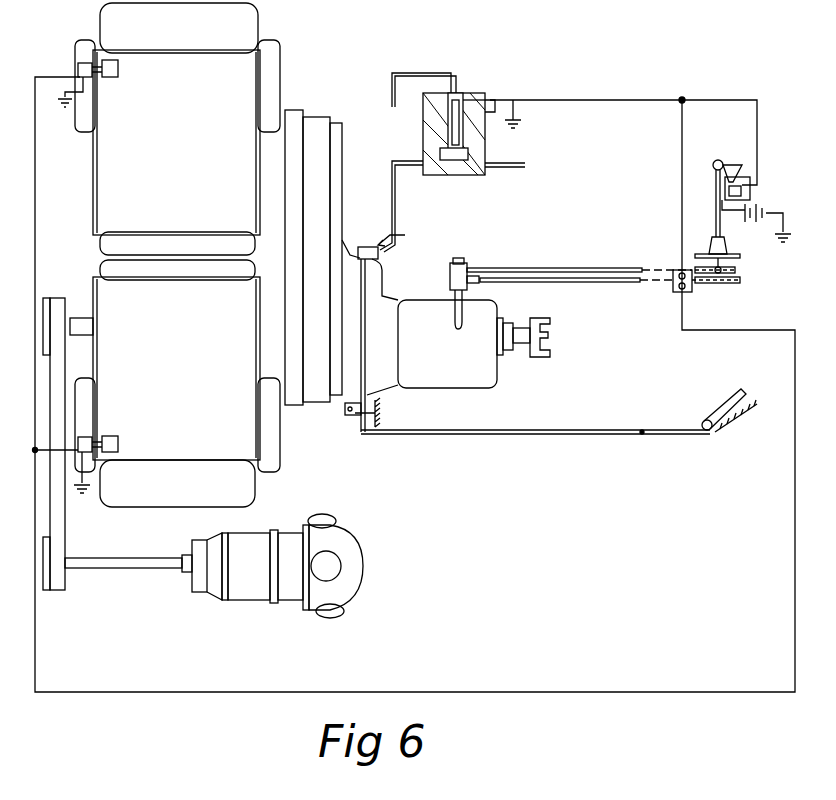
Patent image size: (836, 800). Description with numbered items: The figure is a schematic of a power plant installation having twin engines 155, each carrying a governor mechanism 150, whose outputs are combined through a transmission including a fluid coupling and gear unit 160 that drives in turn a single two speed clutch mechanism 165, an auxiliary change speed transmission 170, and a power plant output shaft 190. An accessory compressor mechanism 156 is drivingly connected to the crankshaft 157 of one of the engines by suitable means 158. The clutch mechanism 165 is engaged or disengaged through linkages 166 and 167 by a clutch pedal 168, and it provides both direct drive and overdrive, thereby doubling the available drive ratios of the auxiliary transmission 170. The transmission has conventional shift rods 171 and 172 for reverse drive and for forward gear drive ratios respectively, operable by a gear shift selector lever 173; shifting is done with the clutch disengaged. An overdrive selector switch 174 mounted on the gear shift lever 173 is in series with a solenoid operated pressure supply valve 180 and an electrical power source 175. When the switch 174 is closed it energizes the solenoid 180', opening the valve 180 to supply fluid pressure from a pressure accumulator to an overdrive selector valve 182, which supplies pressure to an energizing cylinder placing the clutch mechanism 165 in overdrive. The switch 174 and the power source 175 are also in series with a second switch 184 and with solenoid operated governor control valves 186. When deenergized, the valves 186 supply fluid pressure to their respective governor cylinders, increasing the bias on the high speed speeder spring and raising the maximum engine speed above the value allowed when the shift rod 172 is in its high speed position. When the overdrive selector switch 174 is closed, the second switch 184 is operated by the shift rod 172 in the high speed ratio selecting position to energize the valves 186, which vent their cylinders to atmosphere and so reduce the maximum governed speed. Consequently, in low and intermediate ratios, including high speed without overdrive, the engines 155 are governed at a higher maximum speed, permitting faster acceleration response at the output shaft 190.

The governor mechanism 150 is at (113, 78).
The twin engines 155 is at (252, 62).
The accessory compressor mechanism 156 is at (357, 565).
The crankshaft 157 is at (80, 318).
The driving means 158 is at (65, 505).
The fluid coupling and gear unit 160 is at (285, 118).
The two speed clutch mechanism 165 is at (343, 410).
The linkage 166 is at (363, 432).
The linkage 167 is at (500, 435).
The clutch pedal 168 is at (722, 410).
The auxiliary change speed transmission 170 is at (500, 378).
The shift rod 171 is at (545, 268).
The shift rod 172 is at (598, 283).
The gear shift selector lever 173 is at (712, 163).
The overdrive selector switch 174 is at (740, 175).
The electrical power source 175 is at (753, 206).
The solenoid operated pressure supply valve 180 is at (488, 128).
The solenoid 180' is at (482, 88).
The overdrive selector valve 182 is at (352, 248).
The second switch 184 is at (688, 293).
The solenoid operated governor control valves 186 is at (76, 66).
The power plant output shaft 190 is at (548, 332).